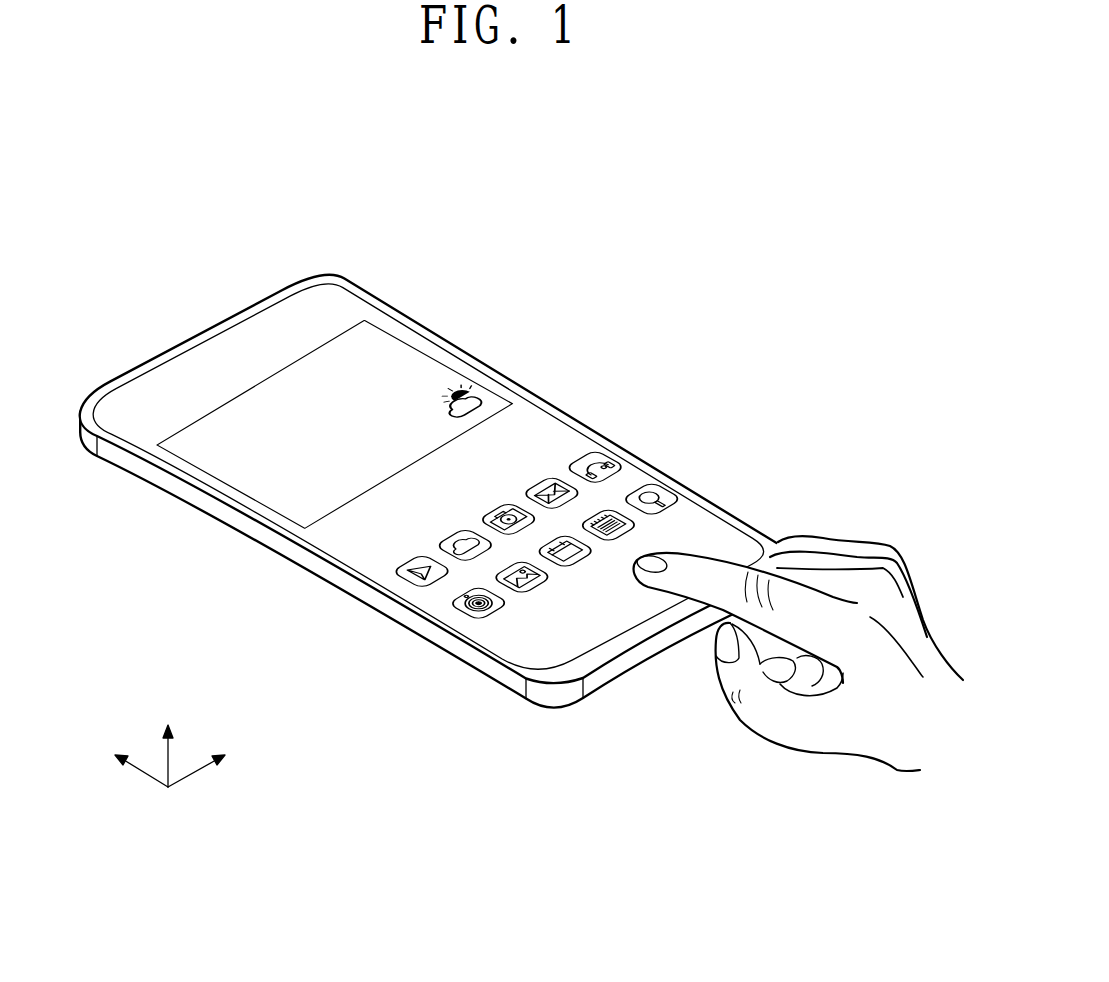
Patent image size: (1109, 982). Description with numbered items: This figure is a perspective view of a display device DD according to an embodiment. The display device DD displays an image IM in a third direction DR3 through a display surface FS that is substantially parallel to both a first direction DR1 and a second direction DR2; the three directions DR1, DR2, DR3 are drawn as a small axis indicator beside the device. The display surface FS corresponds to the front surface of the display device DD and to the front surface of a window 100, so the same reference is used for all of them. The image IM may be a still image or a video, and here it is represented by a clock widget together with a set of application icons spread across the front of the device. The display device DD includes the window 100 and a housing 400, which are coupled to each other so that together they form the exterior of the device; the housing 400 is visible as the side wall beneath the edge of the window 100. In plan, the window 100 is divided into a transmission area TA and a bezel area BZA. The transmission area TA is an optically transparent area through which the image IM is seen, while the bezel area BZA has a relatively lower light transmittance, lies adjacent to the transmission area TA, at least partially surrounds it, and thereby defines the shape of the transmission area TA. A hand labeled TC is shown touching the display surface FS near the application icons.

The display device DD is at (435, 457).
The window 100 is at (435, 444).
The housing 400 is at (268, 541).
The display surface FS is at (237, 213).
The bezel area BZA is at (257, 306).
The transmission area TA is at (205, 356).
The image IM is at (445, 362).
The touch input (user's hand) TC is at (923, 623).
The first direction DR1 is at (220, 761).
The second direction DR2 is at (119, 761).
The third direction DR3 is at (170, 742).